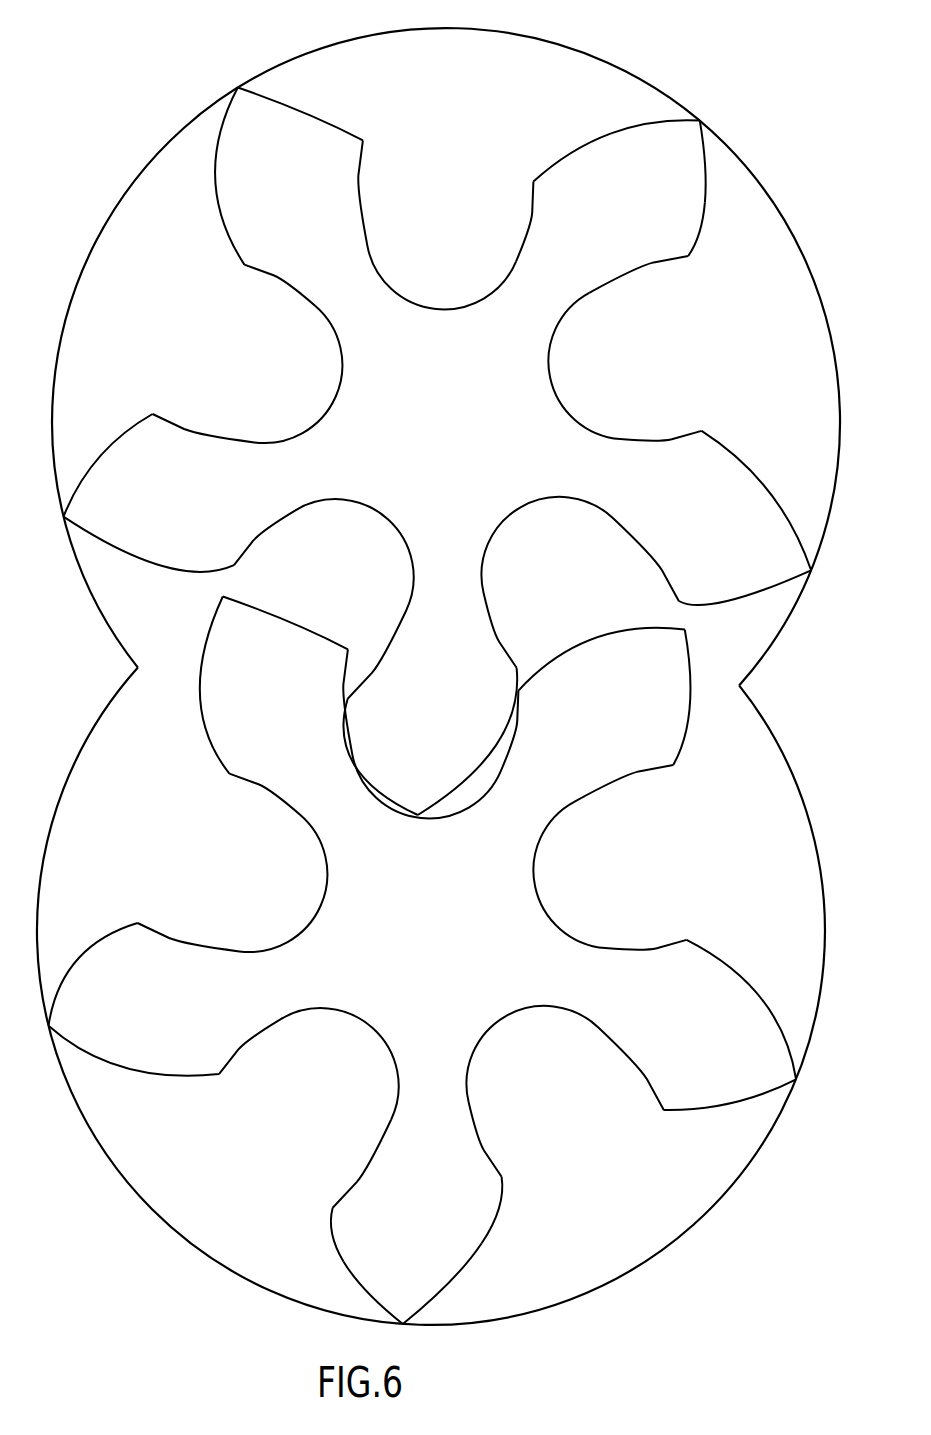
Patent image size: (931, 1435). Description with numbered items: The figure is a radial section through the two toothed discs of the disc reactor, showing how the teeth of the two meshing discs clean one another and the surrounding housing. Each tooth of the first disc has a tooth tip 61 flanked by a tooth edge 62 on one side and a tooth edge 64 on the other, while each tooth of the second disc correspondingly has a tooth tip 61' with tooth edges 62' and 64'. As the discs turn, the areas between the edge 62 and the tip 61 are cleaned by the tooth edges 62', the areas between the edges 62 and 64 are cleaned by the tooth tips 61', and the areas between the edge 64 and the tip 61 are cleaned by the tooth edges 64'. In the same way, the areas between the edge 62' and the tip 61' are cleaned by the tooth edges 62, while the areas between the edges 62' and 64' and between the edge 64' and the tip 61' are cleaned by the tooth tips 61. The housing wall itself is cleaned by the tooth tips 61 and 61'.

The tooth tip 61 is at (413, 1302).
The tooth edge 62 is at (508, 1173).
The tooth edge 64 is at (340, 1191).
The tooth tip 61' is at (678, 143).
The tooth edge 62' is at (553, 197).
The tooth edge 64' is at (665, 247).